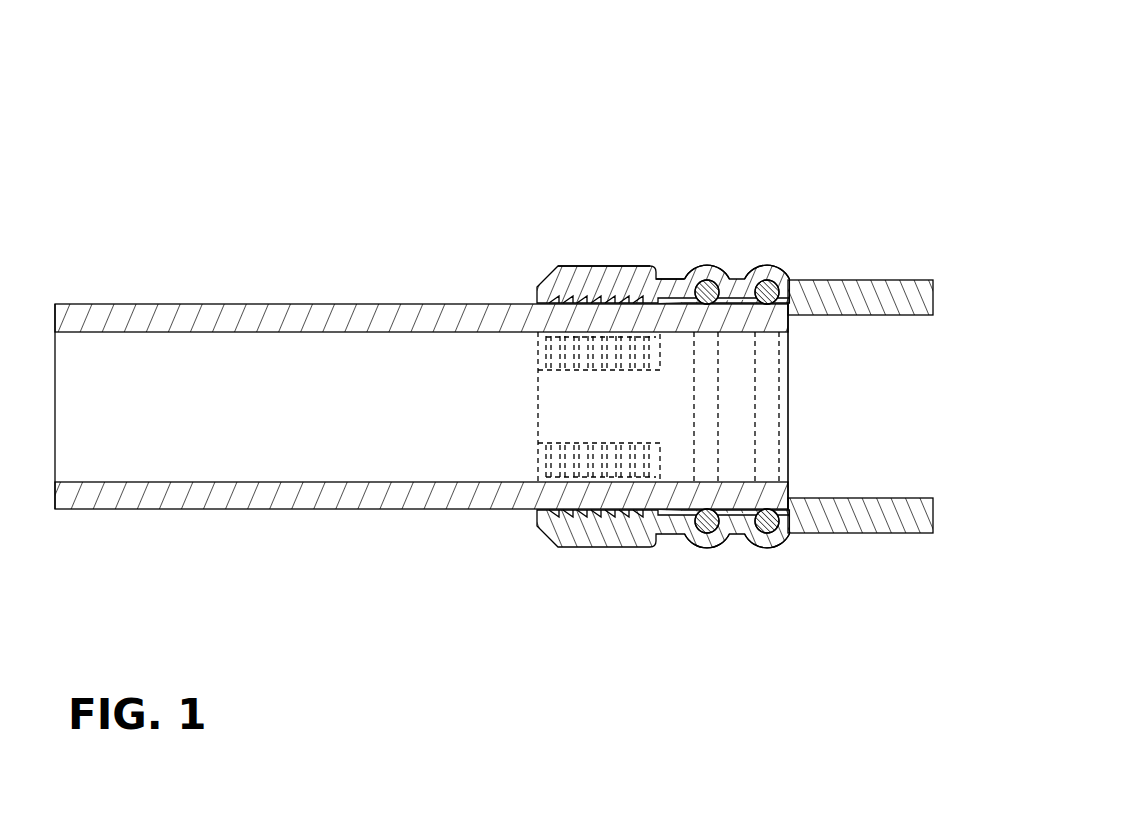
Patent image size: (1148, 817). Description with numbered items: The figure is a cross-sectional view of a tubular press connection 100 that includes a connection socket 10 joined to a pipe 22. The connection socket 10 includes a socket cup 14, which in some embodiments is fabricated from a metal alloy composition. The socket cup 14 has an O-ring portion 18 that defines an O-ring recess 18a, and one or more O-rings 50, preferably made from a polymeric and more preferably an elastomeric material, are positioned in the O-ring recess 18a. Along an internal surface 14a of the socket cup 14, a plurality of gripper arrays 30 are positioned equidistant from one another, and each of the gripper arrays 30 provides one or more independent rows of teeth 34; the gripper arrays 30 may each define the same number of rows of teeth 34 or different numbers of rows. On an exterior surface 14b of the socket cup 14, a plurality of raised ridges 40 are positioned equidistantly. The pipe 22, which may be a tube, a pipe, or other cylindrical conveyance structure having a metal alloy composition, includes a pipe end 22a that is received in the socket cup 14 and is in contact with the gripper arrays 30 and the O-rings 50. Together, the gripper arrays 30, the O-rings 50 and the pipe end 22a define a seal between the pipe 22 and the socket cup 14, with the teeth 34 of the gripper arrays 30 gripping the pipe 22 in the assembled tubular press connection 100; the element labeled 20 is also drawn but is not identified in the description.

The tubular press connection 100 is at (872, 130).
The connection socket 10 is at (867, 426).
The socket cup 14 is at (663, 387).
The internal surface 14a is at (677, 306).
The exterior surface 14b is at (590, 265).
The O-ring portion 18 is at (698, 257).
The O-ring recess 18a is at (765, 548).
The tube 20 is at (892, 522).
The pipe 22 is at (302, 496).
The pipe end 22a is at (789, 437).
The gripper arrays 30 is at (587, 517).
The teeth 34 is at (607, 302).
The raised ridges 40 is at (614, 278).
The O-rings 50 is at (767, 283).